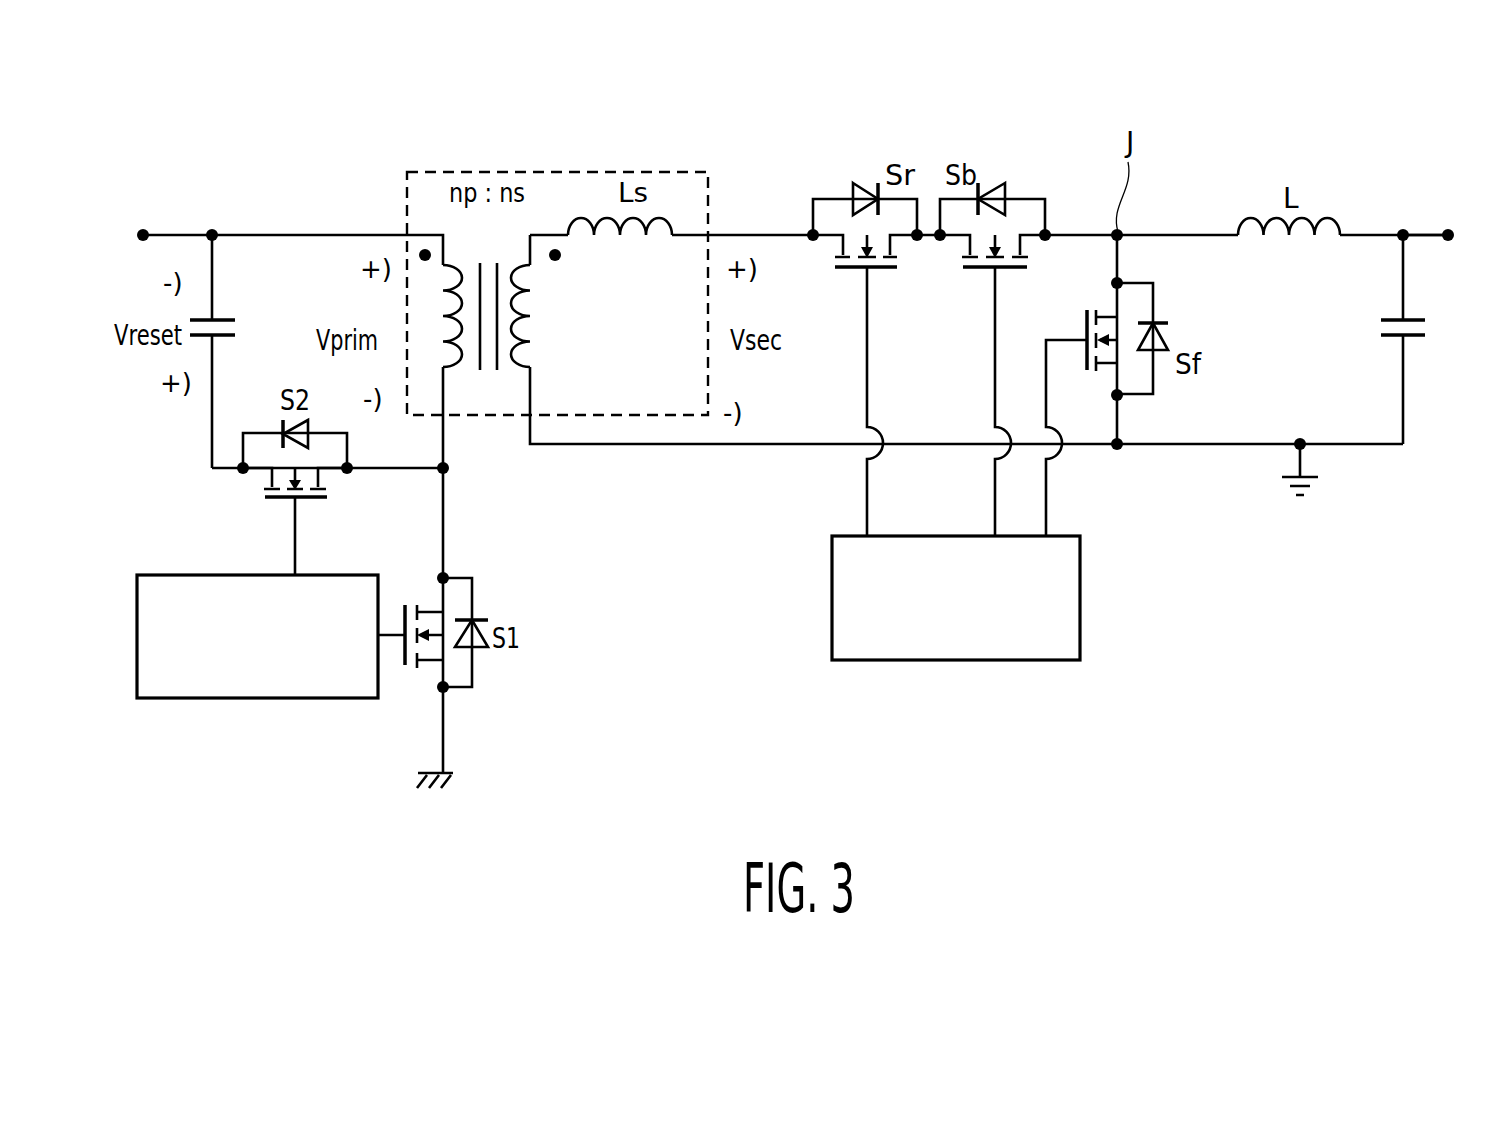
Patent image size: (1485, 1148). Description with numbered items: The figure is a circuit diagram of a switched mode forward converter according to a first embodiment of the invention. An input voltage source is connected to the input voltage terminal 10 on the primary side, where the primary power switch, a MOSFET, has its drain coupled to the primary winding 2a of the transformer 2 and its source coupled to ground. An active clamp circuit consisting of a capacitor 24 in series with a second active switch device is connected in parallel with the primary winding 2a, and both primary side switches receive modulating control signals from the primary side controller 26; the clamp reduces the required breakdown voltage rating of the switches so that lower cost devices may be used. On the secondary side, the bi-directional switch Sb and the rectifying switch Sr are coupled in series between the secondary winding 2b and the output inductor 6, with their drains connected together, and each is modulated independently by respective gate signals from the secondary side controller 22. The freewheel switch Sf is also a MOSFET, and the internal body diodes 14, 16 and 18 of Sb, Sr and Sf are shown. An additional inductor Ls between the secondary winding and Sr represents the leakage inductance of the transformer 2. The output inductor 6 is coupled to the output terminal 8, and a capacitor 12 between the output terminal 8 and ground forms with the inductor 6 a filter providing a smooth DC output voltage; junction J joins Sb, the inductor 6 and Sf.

The input voltage terminal 10 is at (185, 233).
The capacitor 24 is at (225, 318).
The transformer 2 is at (551, 250).
The primary winding 2a is at (458, 262).
The secondary winding 2b is at (520, 265).
The internal body diode 16 is at (860, 197).
The internal body diode 14 is at (990, 197).
The internal body diode 18 is at (1170, 334).
The output inductor 6 is at (1332, 216).
The output terminal 8 is at (1449, 243).
The capacitor 12 is at (1416, 340).
The secondary side controller 22 is at (1080, 593).
The primary side controller 26 is at (170, 573).